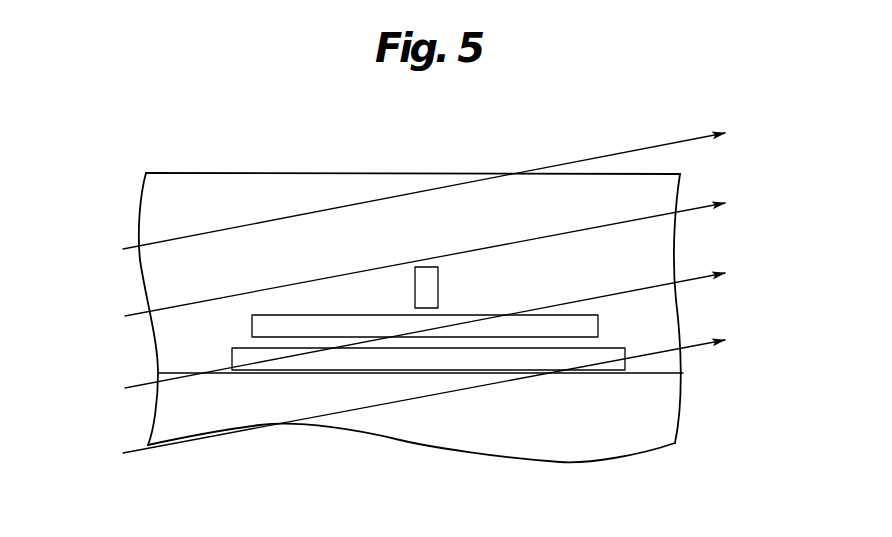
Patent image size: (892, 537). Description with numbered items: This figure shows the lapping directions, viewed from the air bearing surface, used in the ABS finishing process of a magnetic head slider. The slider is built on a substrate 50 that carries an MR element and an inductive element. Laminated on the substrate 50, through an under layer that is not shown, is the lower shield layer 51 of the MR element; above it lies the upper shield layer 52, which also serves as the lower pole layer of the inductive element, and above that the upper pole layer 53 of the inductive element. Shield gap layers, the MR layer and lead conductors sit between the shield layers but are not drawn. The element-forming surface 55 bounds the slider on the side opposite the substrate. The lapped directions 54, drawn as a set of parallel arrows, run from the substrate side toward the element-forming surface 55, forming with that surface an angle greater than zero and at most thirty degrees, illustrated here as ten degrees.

The substrate 50 is at (657, 413).
The lower shield layer 51 is at (540, 360).
The upper shield layer 52 is at (537, 327).
The upper pole layer 53 is at (425, 283).
The lapped direction 54 is at (660, 213).
The element-forming surface 55 is at (310, 173).